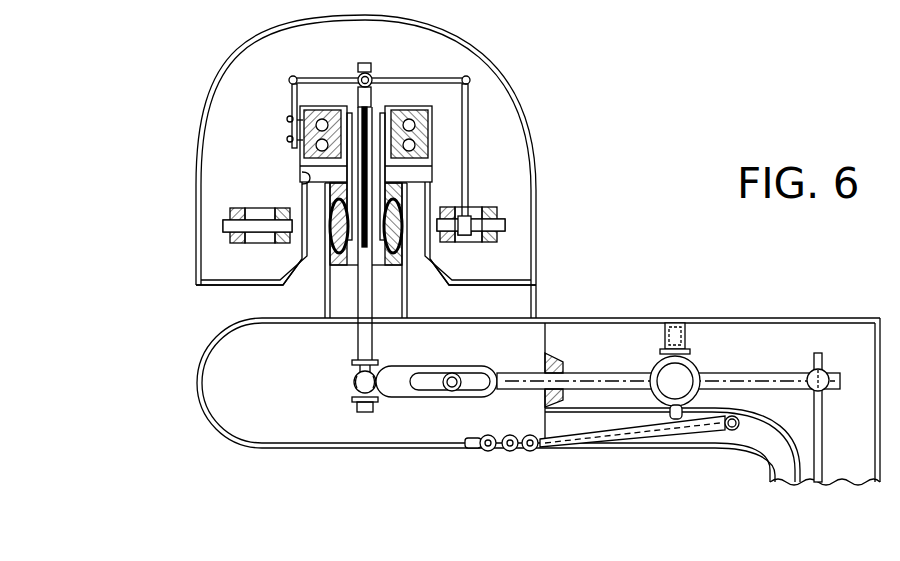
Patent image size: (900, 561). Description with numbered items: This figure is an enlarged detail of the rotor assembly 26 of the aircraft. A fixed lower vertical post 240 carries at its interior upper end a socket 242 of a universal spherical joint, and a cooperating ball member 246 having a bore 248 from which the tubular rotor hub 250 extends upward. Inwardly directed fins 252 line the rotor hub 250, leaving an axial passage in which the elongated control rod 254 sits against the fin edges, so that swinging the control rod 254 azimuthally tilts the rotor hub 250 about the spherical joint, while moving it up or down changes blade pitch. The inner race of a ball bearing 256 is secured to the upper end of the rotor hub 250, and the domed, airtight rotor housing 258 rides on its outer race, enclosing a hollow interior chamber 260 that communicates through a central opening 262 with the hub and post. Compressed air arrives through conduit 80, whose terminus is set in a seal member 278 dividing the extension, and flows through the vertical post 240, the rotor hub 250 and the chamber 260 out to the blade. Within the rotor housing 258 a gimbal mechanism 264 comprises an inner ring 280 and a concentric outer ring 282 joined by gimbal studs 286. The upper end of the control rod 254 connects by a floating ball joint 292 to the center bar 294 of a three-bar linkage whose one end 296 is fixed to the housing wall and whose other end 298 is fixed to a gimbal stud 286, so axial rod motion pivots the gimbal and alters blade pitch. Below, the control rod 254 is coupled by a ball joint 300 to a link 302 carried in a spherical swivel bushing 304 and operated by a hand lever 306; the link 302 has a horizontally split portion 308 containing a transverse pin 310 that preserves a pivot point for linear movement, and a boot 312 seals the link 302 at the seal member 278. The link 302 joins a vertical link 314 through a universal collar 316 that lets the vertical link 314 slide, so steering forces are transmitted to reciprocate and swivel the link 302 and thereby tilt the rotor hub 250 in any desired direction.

The rotor assembly 26 is at (524, 97).
The conduit 80 is at (784, 478).
The vertical post 240 is at (408, 308).
The socket 242 is at (334, 250).
The ball member 246 is at (348, 250).
The bore 248 is at (384, 255).
The rotor hub 250 is at (388, 174).
The fins 252 is at (375, 117).
The control rod 254 is at (374, 342).
The ball bearing 256 is at (414, 114).
The rotor housing 258 is at (530, 124).
The hollow interior chamber 260 is at (250, 95).
The central opening 262 is at (350, 102).
The gimbal mechanism 264 is at (250, 264).
The seal member 278 is at (552, 338).
The inner ring 280 is at (449, 243).
The outer ring 282 is at (500, 243).
The gimbal studs 286 is at (264, 218).
The floating ball joint 292 is at (370, 73).
The center bar 294 is at (402, 76).
The end 296 is at (288, 139).
The end 298 is at (462, 212).
The ball joint 300 is at (346, 386).
The link 302 is at (760, 372).
The spherical swivel bushing 304 is at (696, 366).
The hand lever 306 is at (486, 456).
The horizontally split portion 308 is at (420, 398).
The transverse pin 310 is at (455, 373).
The boot 312 is at (563, 370).
The vertical link 314 is at (824, 427).
The universal collar 316 is at (825, 368).